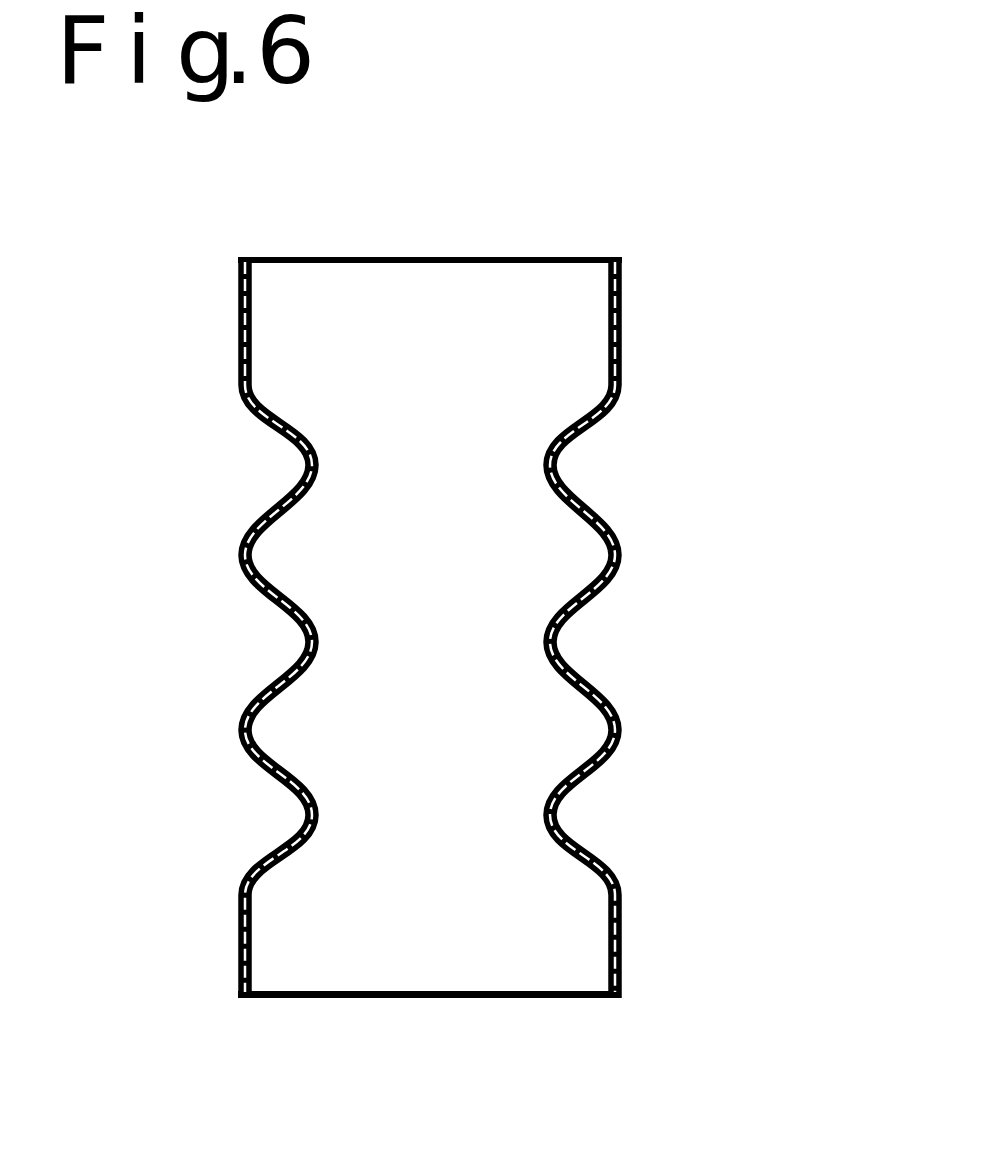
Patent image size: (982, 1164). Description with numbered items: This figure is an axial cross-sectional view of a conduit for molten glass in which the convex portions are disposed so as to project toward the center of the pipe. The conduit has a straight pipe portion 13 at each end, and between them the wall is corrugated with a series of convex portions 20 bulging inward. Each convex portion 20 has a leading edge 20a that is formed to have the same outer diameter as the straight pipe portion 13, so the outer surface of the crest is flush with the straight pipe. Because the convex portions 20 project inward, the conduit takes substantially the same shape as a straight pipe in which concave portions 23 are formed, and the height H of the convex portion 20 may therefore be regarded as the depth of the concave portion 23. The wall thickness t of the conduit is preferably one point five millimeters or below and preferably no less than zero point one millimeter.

The straight pipe portion 13 is at (557, 627).
The convex portion 20 is at (561, 640).
The leading edge 20a is at (622, 562).
The concave portion 23 is at (628, 557).
The wall thickness t is at (345, 323).
The height of the convex portion H is at (621, 563).